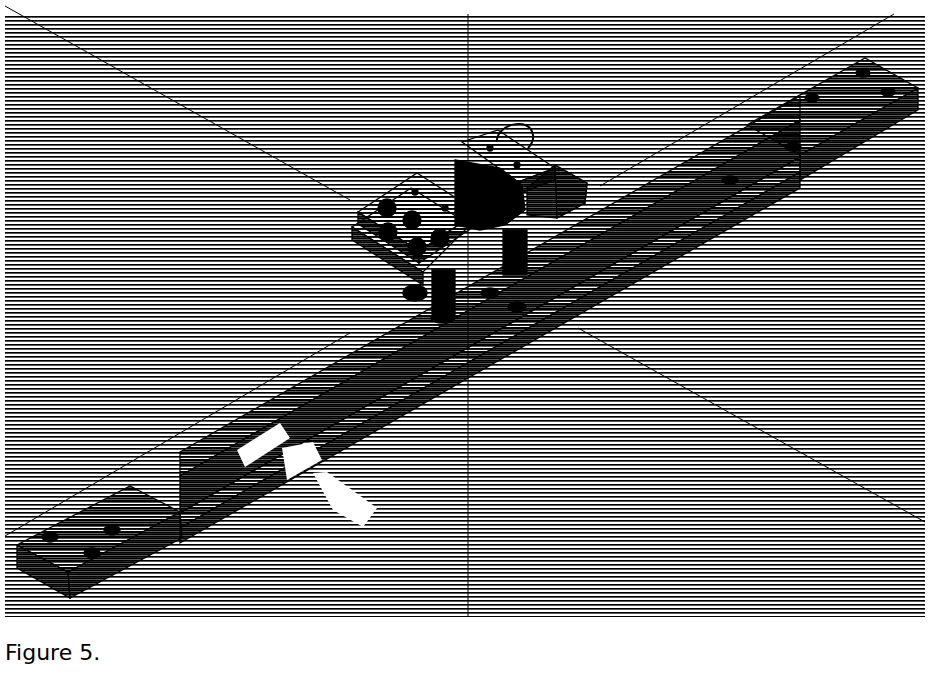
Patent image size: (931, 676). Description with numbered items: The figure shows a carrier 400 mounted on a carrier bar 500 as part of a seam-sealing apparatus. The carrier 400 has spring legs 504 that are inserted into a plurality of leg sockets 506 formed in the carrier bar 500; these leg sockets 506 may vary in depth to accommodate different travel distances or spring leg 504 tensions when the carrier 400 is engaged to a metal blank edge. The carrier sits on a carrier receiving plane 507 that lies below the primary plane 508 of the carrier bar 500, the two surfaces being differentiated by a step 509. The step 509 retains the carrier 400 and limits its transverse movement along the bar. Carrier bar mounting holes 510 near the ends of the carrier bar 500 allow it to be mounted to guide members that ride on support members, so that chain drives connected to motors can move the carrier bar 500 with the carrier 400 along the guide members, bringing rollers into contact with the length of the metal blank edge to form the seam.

The gripper module 400 is at (372, 222).
The carrier bar 500 is at (467, 319).
The spring legs 504 is at (407, 287).
The leg sockets 506 is at (478, 373).
The carrier receiving plane 507 is at (420, 312).
The primary plane 508 is at (774, 202).
The step 509 is at (635, 288).
The carrier bar mounting holes 510 is at (805, 90).